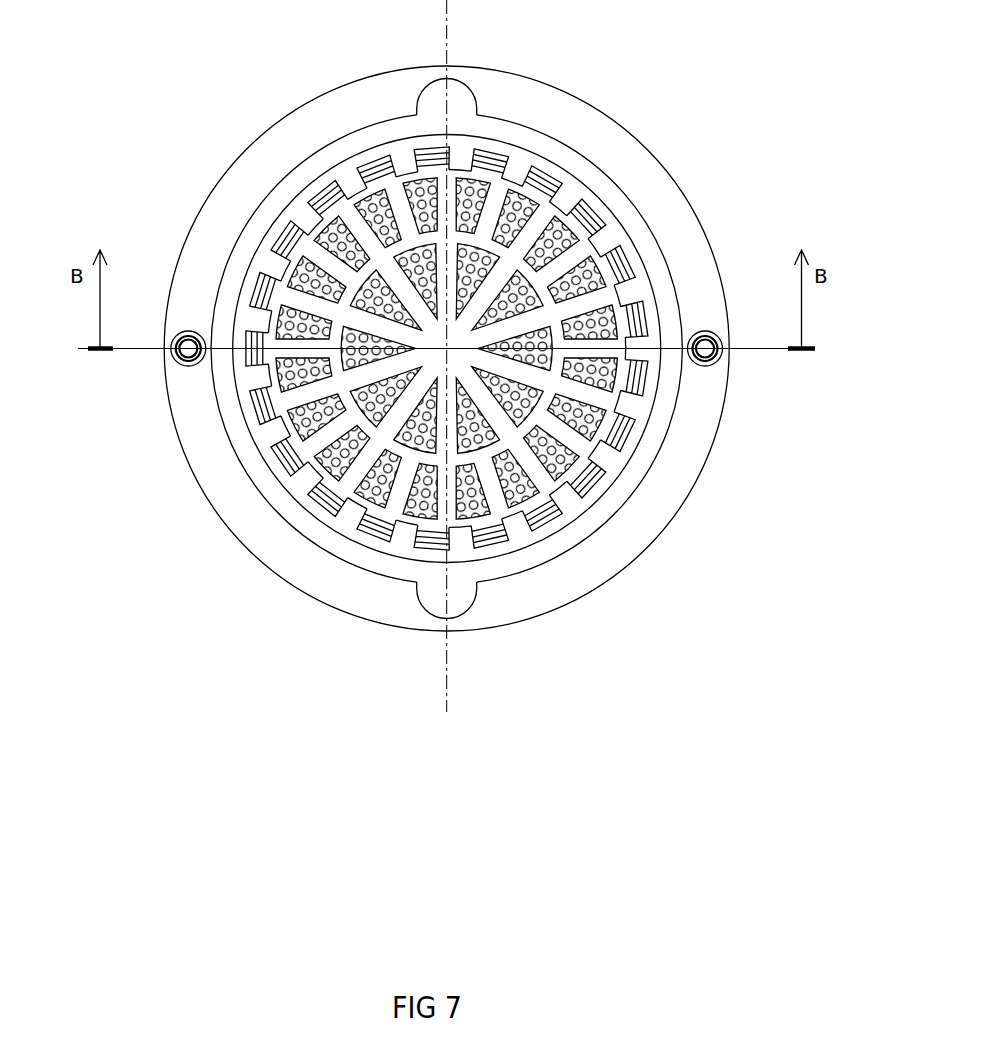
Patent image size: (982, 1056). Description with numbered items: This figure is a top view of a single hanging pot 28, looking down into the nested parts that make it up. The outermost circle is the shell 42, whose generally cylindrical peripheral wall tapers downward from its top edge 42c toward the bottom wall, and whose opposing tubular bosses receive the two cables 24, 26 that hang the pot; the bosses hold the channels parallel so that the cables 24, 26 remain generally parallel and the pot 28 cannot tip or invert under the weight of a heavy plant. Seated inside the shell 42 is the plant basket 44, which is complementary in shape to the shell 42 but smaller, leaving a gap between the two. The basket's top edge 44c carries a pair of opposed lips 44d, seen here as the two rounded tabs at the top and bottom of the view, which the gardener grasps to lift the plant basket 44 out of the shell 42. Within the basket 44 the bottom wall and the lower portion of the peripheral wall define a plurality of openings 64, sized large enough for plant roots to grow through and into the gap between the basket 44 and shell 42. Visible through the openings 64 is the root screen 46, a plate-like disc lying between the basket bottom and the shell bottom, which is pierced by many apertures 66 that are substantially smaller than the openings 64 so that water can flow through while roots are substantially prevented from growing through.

The cable 24 is at (177, 355).
The cable 26 is at (722, 352).
The pot 28 is at (776, 546).
The shell 42 is at (590, 562).
The top edge 42c is at (242, 510).
The plant basket 44 is at (347, 485).
The top edge 44c is at (395, 567).
The lips 44d is at (455, 87).
The root screen 46 is at (273, 378).
The openings 64 is at (515, 192).
The apertures 66 is at (330, 223).